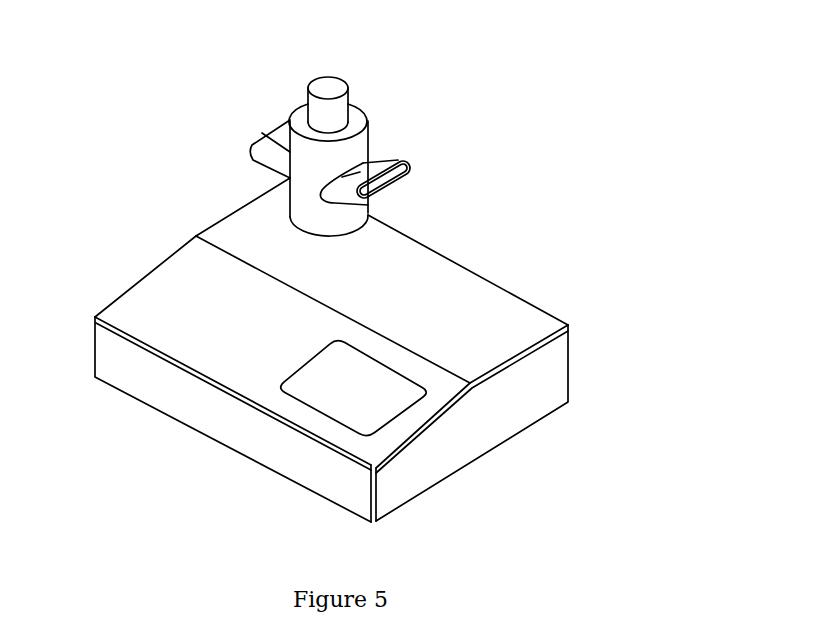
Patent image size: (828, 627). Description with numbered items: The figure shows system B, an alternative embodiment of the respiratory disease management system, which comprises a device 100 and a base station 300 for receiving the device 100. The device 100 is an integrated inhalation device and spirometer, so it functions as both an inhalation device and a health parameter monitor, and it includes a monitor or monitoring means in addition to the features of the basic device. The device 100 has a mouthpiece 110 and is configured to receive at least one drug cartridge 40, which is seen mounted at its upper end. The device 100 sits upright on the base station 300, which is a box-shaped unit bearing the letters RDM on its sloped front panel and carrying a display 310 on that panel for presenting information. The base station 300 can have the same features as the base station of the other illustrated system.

The drug cartridge 40 is at (332, 85).
The device 100 is at (376, 120).
The mouthpiece of device 110 is at (406, 170).
The base station 300 is at (574, 376).
The display 310 is at (382, 405).
The system B is at (150, 124).